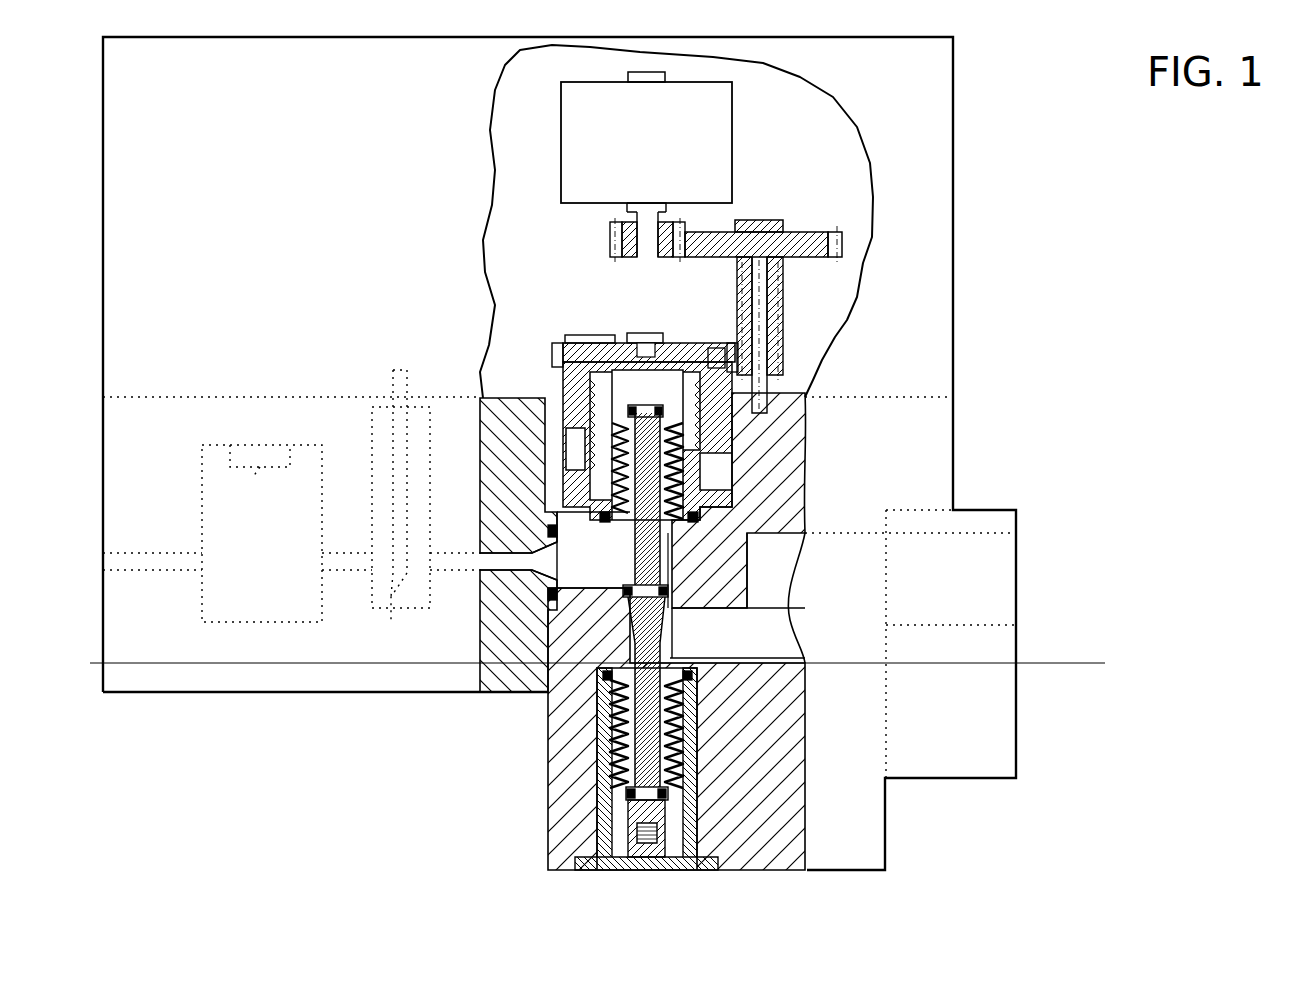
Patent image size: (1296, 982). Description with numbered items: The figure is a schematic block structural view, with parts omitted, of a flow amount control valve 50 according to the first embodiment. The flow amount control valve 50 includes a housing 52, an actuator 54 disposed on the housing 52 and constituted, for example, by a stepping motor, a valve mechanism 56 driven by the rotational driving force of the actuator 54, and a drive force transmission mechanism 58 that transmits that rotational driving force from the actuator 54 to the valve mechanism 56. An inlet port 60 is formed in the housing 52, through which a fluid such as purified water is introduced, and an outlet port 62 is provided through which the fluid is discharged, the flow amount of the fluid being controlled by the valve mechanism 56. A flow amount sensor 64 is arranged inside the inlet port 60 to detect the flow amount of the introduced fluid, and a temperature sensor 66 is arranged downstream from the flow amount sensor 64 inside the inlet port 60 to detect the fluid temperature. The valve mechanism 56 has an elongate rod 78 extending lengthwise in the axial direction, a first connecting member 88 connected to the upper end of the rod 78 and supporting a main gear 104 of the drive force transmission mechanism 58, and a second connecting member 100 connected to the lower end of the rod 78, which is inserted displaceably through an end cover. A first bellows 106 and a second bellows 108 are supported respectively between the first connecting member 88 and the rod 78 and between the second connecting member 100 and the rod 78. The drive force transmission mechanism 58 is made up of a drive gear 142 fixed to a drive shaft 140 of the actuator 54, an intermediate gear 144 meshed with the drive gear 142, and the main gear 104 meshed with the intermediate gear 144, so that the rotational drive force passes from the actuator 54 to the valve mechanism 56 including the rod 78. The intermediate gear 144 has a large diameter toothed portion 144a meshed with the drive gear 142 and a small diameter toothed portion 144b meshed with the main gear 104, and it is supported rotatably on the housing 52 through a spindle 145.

The flow amount control valve 50 is at (1026, 100).
The housing 52 is at (543, 792).
The actuator 54 is at (715, 138).
The valve mechanism 56 is at (683, 627).
The drive force transmission mechanism 58 is at (718, 258).
The inlet port 60 is at (580, 567).
The outlet port 62 is at (730, 632).
The flow amount sensor 64 is at (237, 533).
The temperature sensor 66 is at (427, 511).
The rod 78 is at (662, 728).
The first connecting member 88 is at (563, 370).
The second connecting member 100 is at (668, 872).
The main gear 104 is at (575, 342).
The first bellows 106 is at (612, 483).
The second bellows 108 is at (675, 770).
The drive shaft 140 is at (647, 228).
The drive gear 142 is at (620, 244).
The intermediate gear 144 is at (806, 233).
The large diameter toothed portion 144a is at (842, 250).
The small diameter toothed portion 144b is at (783, 300).
The spindle 145 is at (760, 352).